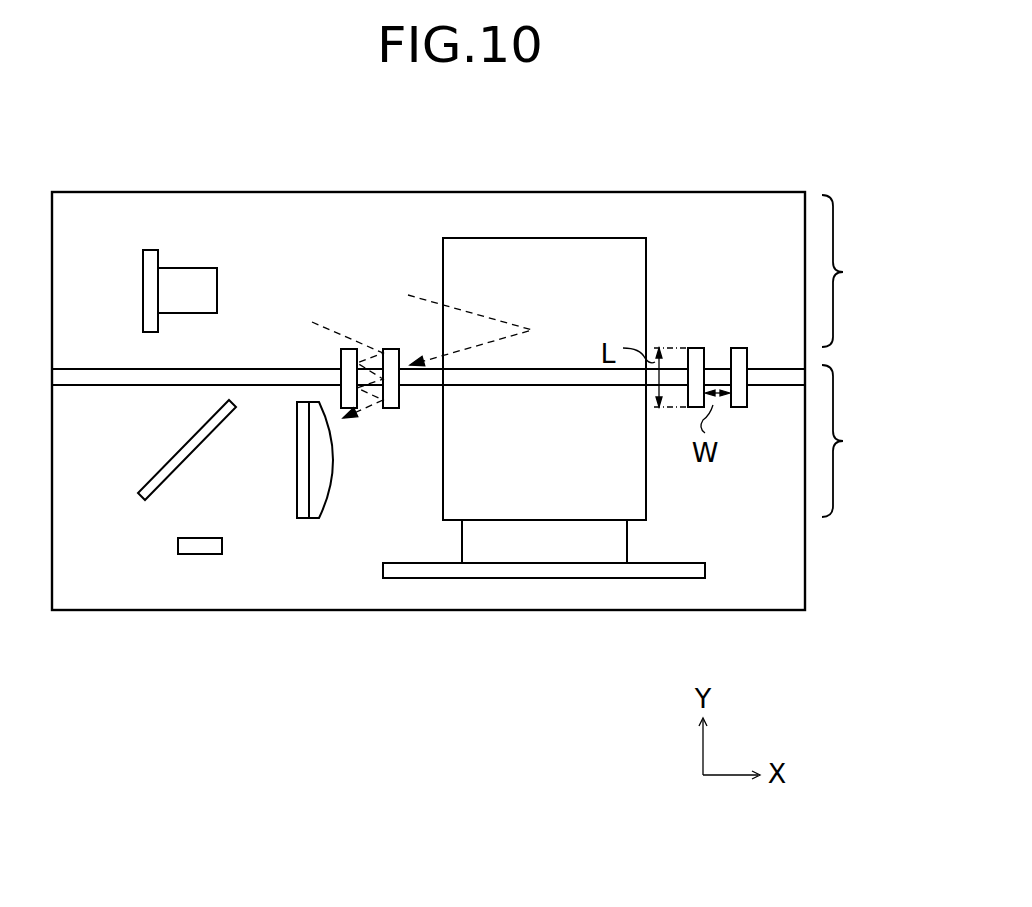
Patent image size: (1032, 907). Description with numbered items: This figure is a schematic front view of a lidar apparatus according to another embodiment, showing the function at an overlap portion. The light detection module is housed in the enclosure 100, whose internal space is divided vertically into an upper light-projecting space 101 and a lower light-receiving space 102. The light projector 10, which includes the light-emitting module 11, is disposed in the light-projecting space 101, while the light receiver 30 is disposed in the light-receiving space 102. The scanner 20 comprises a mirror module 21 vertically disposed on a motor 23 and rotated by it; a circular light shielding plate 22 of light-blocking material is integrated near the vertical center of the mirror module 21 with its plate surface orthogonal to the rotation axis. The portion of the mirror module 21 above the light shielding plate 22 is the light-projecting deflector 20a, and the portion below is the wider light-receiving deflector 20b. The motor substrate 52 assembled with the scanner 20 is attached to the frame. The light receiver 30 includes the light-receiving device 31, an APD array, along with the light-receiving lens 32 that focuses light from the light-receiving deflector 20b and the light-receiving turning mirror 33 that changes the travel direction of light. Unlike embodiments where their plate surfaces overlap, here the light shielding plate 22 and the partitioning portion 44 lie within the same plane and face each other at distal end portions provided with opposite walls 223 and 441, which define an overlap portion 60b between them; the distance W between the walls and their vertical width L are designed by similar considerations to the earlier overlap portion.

The enclosure 100 is at (747, 188).
The light projector 10 is at (288, 225).
The light-emitting module 11 is at (183, 283).
The scanner 20 is at (578, 215).
The light-projecting deflector 20a is at (610, 250).
The light-receiving deflector 20b is at (630, 495).
The mirror module 21 is at (460, 250).
The light shielding plate 22 is at (533, 386).
The motor 23 is at (617, 542).
The light receiver 30 is at (130, 565).
The light-receiving device 31 is at (200, 555).
The light-receiving lens 32 is at (305, 519).
The light-receiving turning mirror 33 is at (180, 450).
The partitioning portion 44 is at (100, 369).
The opposite wall 441 is at (341, 352).
The opposite wall 223 is at (398, 406).
The motor substrate 52 is at (705, 567).
The overlap portion 60b is at (368, 428).
The light-projecting space 101 is at (862, 271).
The light-receiving space 102 is at (859, 441).